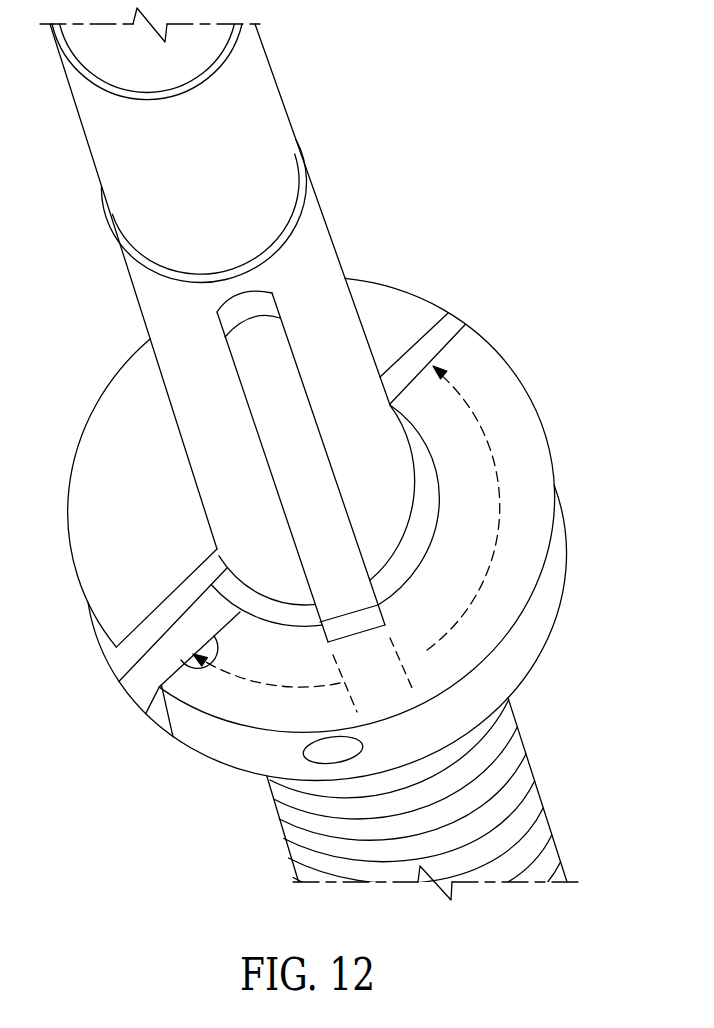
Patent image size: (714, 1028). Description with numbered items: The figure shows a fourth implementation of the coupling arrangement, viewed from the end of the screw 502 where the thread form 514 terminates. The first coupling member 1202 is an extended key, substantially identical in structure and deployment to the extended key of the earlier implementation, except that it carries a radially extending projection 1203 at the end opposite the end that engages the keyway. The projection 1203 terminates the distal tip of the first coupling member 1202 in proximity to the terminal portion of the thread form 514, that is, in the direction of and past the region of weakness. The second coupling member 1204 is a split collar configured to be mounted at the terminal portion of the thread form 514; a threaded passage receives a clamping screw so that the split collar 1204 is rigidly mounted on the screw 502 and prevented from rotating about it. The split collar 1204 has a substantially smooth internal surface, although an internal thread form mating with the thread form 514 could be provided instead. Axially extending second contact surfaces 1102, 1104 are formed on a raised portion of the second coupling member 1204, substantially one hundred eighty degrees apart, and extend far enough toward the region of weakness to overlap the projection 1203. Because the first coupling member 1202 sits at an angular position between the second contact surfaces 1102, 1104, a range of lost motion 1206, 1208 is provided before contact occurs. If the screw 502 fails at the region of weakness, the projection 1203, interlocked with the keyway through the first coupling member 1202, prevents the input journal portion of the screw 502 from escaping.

The screw 502 is at (90, 145).
The thread form 514 is at (523, 757).
The second contact surface 1102 is at (128, 655).
The second contact surface 1104 is at (445, 322).
The first coupling member 1202 is at (240, 350).
The radially extending projection 1203 is at (368, 632).
The second coupling member 1204 is at (562, 503).
The range of lost motion 1206 is at (273, 685).
The range of lost motion 1208 is at (463, 400).